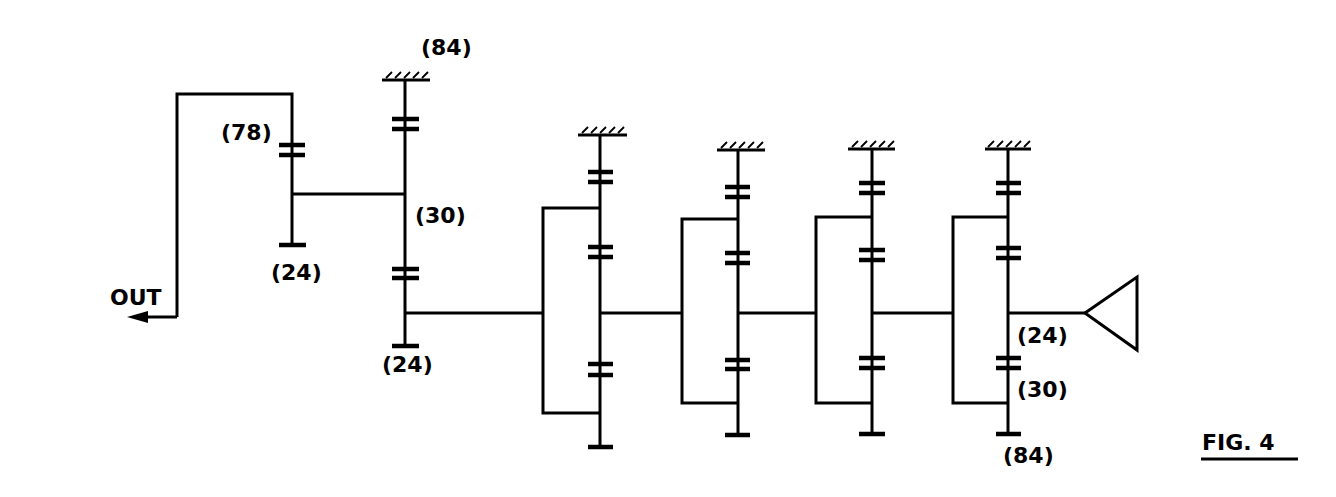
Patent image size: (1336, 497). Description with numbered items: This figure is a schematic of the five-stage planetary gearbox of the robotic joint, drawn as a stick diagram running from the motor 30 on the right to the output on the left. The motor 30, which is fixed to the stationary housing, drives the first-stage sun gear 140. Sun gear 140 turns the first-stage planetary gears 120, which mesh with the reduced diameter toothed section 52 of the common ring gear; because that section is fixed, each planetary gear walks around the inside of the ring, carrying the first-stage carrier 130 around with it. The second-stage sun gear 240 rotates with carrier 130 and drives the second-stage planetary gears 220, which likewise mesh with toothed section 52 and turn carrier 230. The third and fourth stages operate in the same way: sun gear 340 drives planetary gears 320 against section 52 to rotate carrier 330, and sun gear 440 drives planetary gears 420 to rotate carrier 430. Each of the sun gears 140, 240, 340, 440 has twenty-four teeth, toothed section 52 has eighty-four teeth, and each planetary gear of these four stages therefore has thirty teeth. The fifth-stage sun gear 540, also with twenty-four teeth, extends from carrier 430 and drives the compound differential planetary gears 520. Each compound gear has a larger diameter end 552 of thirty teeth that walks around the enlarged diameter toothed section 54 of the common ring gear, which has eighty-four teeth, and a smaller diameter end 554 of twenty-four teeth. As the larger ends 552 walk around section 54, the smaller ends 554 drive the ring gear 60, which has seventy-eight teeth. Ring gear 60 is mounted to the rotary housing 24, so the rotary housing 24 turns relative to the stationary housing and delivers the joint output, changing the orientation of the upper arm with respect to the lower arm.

The rotary housing 24 is at (232, 94).
The motor 30 is at (1136, 278).
The reduced diameter toothed section 52 is at (738, 168).
The enlarged diameter toothed section 54 is at (405, 100).
The ring gear 60 is at (292, 121).
The planetary gears 120 is at (1009, 207).
The carrier 130 is at (965, 404).
The sun gear 140 is at (1009, 283).
The planetary gears 220 is at (873, 217).
The carrier 230 is at (840, 404).
The sun gear 240 is at (873, 300).
The planetary gears 320 is at (739, 213).
The carrier 330 is at (690, 404).
The sun gear 340 is at (739, 300).
The planetary gears 420 is at (601, 203).
The carrier 430 is at (563, 414).
The sun gear 440 is at (601, 300).
The compound differential planetary gears 520 is at (360, 194).
The sun gear 540 is at (405, 295).
The larger diameter end 552 is at (405, 163).
The smaller diameter end 554 is at (292, 182).